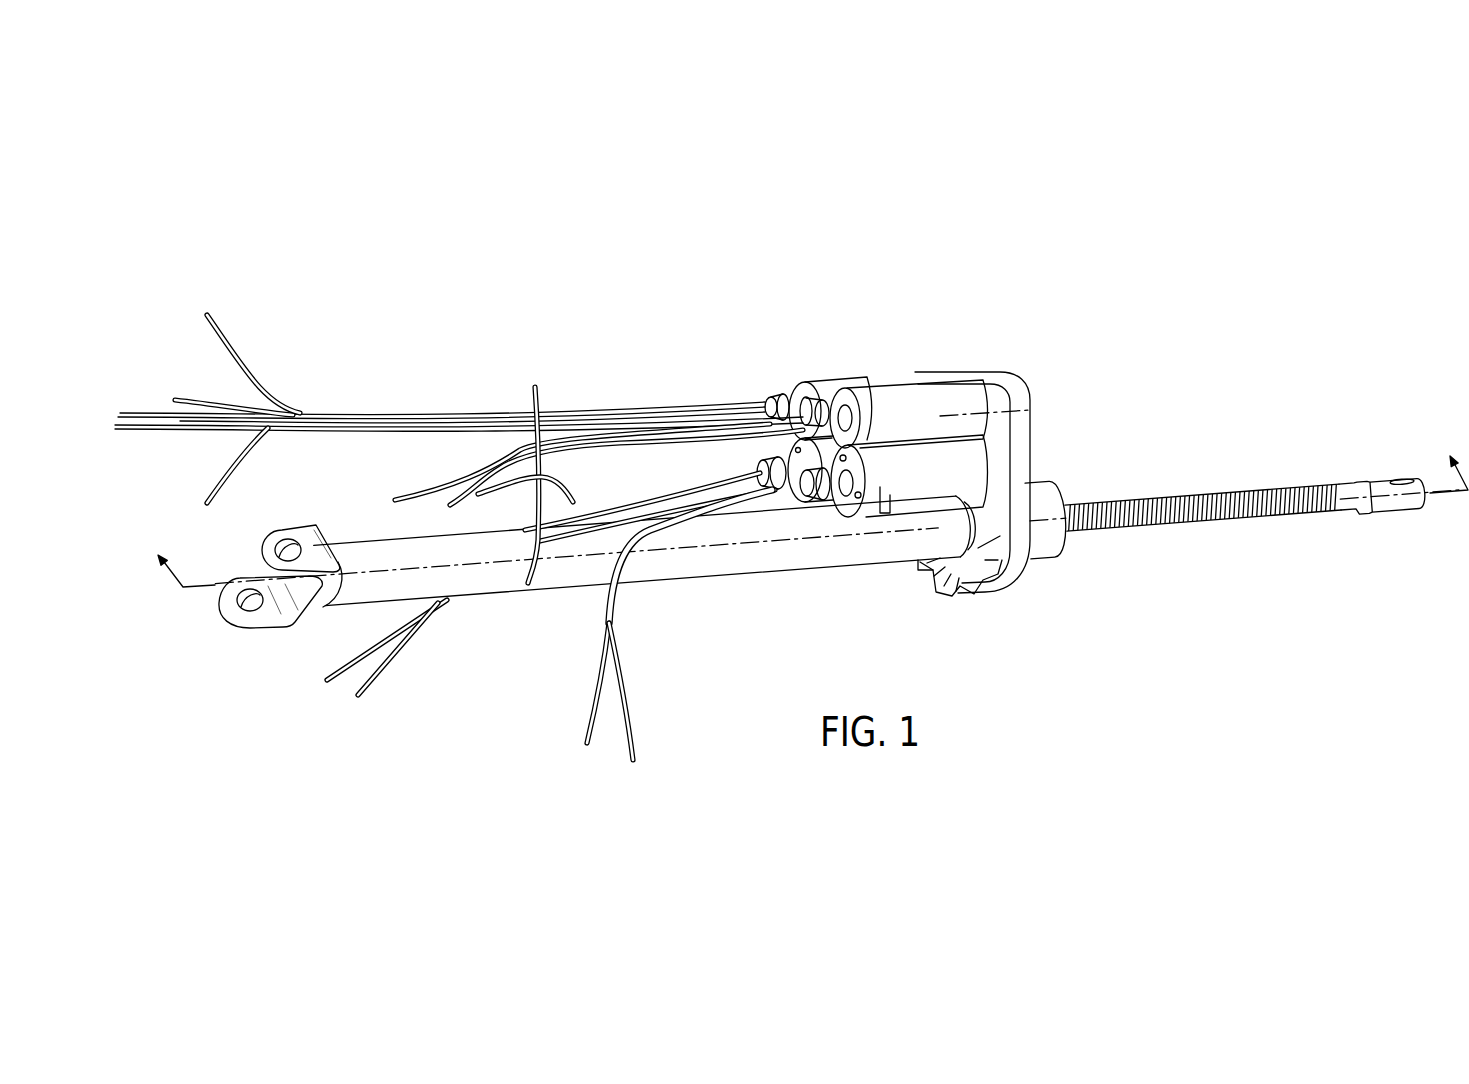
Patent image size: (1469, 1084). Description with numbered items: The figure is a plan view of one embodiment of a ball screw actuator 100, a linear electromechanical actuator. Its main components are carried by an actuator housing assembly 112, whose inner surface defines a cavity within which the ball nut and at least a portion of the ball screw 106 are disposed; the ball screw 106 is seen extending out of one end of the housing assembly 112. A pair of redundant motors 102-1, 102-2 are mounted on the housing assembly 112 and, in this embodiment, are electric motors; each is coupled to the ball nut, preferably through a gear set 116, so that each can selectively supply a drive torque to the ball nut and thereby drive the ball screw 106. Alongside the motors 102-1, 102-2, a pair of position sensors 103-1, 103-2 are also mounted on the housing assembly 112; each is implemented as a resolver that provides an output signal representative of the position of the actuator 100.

The ball screw actuator 100 is at (791, 491).
The actuator housing assembly 112 is at (621, 540).
The ball screw 106 is at (1190, 524).
The gear set 116 is at (1025, 476).
The position sensor 103-1 is at (952, 395).
The position sensor 103-2 is at (897, 380).
The motor 102-1 is at (977, 475).
The motor 102-2 is at (793, 450).